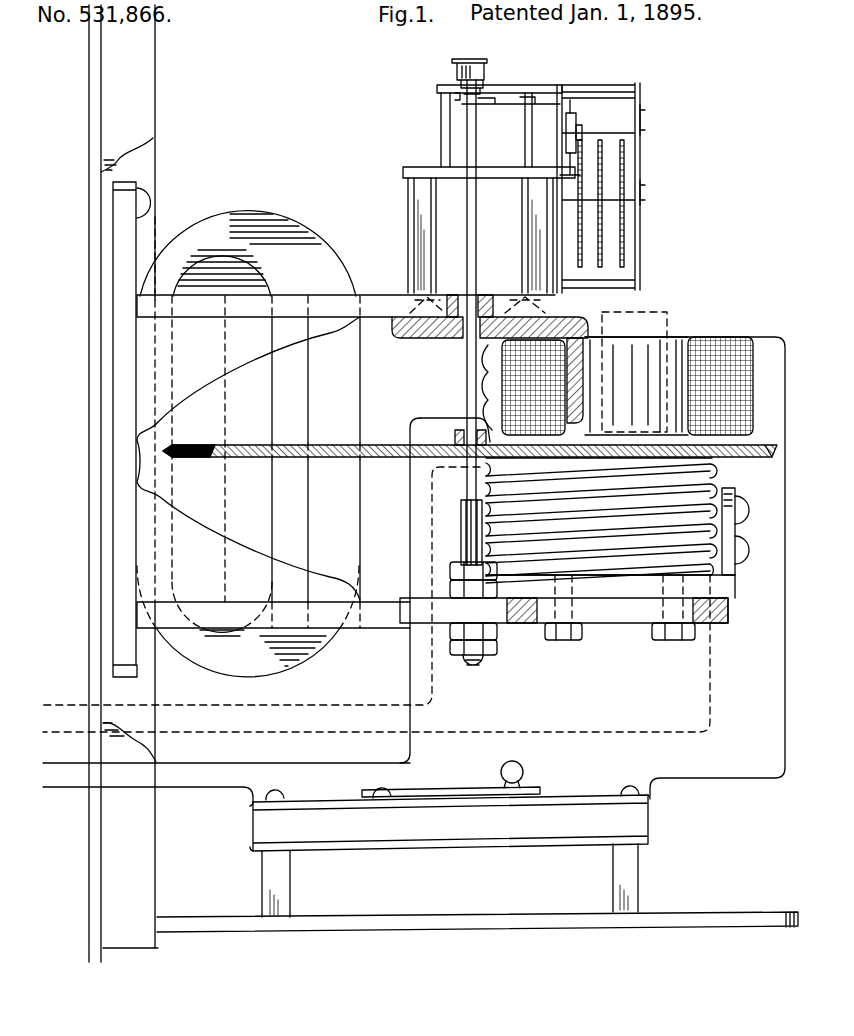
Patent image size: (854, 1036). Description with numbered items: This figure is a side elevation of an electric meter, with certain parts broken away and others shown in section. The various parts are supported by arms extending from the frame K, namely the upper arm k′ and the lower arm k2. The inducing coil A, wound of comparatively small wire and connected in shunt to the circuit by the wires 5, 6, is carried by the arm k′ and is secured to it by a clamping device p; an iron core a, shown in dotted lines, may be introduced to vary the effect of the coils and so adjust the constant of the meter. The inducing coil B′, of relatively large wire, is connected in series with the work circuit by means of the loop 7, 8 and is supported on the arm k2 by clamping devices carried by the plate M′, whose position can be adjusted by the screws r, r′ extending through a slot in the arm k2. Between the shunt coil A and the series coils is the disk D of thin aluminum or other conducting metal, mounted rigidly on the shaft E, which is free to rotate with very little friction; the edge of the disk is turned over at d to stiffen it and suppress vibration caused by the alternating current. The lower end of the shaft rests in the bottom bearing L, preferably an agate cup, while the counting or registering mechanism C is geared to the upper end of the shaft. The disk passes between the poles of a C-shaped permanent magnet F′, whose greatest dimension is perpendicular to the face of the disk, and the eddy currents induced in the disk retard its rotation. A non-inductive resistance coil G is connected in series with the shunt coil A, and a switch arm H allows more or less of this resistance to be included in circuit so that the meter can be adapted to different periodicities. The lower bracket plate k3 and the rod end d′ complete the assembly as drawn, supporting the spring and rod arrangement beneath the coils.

The frame K is at (122, 432).
The permanent magnet F′ is at (220, 212).
The arm k′ is at (346, 306).
The clamping device p is at (604, 311).
The iron core a is at (636, 314).
The inducing coil A is at (728, 333).
The wire 6 is at (170, 787).
The shaft E is at (470, 412).
The turned-over edge d is at (164, 455).
The disk D is at (378, 458).
The counting or registering mechanism C is at (524, 177).
The inducing coil B′ is at (706, 470).
The rod end d′ is at (766, 456).
The bottom bearing L is at (468, 523).
The plate M′ is at (610, 583).
The lower bracket plate k3 is at (614, 612).
The screw r is at (566, 641).
The screw r′ is at (686, 641).
The loop 7 is at (434, 680).
The loop 8 is at (376, 653).
The arm k2 is at (273, 614).
The wire 5 is at (314, 763).
The non-inductive resistance coil G is at (477, 859).
The switch arm H is at (440, 790).